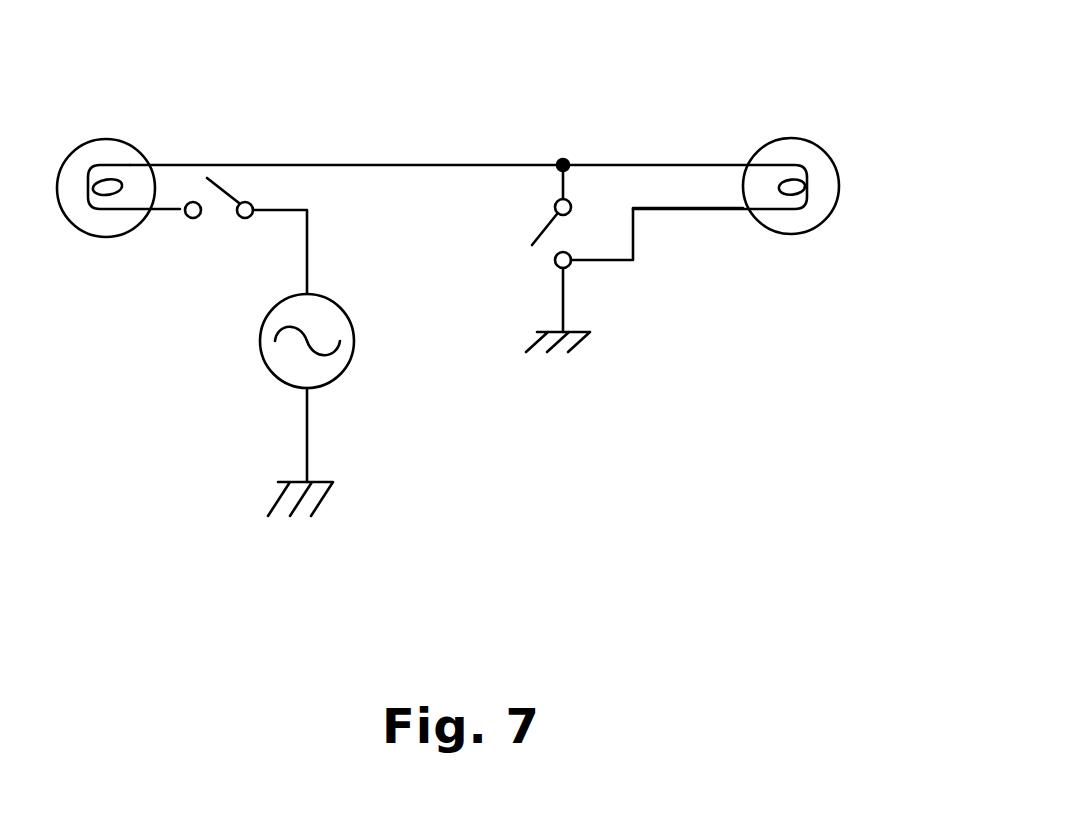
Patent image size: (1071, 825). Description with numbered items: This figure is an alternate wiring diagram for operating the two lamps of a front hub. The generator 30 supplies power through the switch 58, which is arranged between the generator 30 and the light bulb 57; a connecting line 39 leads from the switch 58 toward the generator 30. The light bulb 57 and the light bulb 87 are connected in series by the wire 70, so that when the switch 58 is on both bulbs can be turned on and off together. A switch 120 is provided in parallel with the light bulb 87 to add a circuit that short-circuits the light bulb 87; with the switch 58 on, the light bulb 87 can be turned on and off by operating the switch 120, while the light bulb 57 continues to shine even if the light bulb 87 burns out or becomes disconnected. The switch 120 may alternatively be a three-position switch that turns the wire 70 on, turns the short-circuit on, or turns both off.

The light bulb 57 is at (123, 142).
The switch 58 is at (228, 213).
The wire 39 is at (310, 223).
The generator 30 is at (355, 345).
The wire 70 is at (455, 166).
The switch 120 is at (567, 230).
The light bulb 87 is at (825, 148).